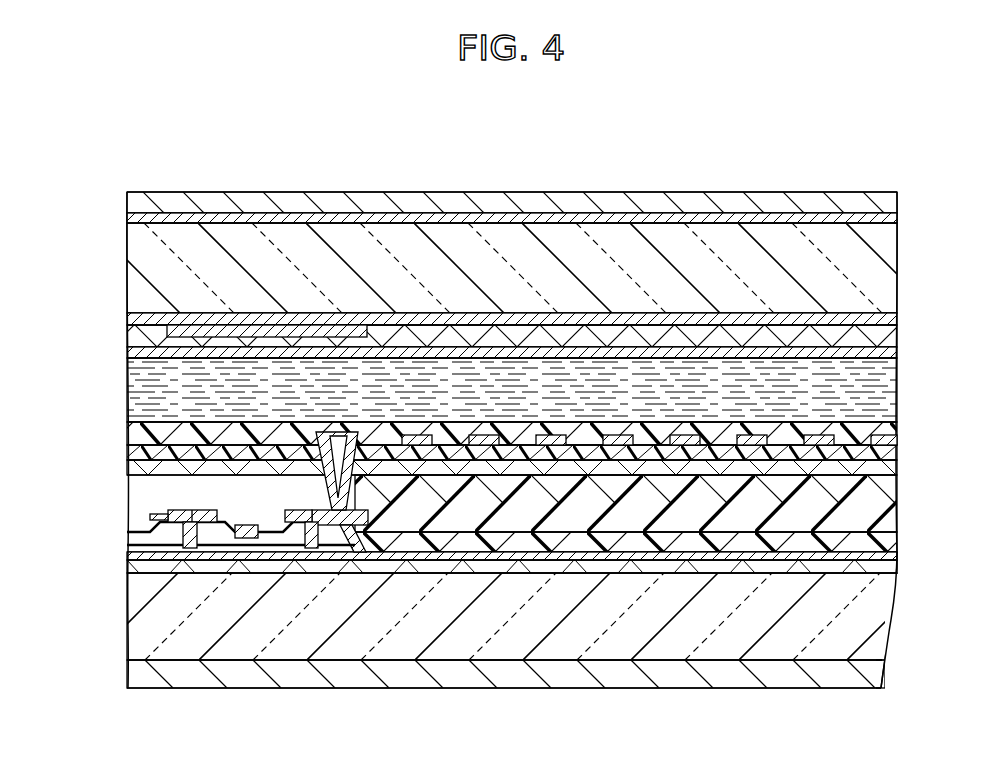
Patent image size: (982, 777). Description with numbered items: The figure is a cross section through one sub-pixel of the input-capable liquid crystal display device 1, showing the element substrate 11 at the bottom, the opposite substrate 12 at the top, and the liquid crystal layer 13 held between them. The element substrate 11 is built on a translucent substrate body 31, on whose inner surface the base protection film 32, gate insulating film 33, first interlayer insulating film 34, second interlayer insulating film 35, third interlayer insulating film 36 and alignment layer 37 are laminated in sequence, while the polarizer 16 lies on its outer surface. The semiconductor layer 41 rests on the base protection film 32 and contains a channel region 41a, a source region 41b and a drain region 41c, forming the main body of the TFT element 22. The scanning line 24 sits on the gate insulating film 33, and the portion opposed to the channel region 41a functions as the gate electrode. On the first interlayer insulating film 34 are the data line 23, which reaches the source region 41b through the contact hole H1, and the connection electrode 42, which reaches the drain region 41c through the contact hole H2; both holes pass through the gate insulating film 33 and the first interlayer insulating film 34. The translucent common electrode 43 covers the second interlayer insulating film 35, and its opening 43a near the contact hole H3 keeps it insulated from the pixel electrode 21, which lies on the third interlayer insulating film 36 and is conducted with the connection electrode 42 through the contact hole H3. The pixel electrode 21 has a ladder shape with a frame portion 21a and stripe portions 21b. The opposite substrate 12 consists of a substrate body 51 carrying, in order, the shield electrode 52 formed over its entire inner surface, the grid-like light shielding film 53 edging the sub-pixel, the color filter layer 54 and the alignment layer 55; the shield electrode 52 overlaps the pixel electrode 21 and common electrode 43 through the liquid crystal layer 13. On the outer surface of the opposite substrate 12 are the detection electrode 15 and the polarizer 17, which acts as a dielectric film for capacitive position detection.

The input-capable liquid crystal display device 1 is at (826, 161).
The element substrate 11 is at (95, 425).
The opposite substrate 12 is at (95, 355).
The liquid crystal layer 13 is at (95, 358).
The detection electrode 15 is at (127, 220).
The polarizer 16 is at (127, 678).
The polarizer 17 is at (127, 200).
The pixel electrode 21 is at (646, 271).
The frame portion 21a is at (415, 435).
The stripe portions 21b is at (548, 435).
The TFT element 22 is at (355, 552).
The data line 23 is at (175, 510).
The scanning line 24 is at (247, 525).
The substrate body 31 is at (876, 620).
The base protection film 32 is at (892, 567).
The gate insulating film 33 is at (893, 557).
The first interlayer insulating film 34 is at (895, 543).
The second interlayer insulating film 35 is at (895, 490).
The third interlayer insulating film 36 is at (895, 455).
The alignment layer 37 is at (895, 430).
The semiconductor layer 41 is at (241, 642).
The channel region 41a is at (248, 550).
The source region 41b is at (202, 550).
The drain region 41c is at (300, 550).
The connection electrode 42 is at (370, 522).
The common electrode 43 is at (895, 468).
The opening 43a is at (320, 438).
The substrate body 51 is at (895, 262).
The shield electrode 52 is at (895, 320).
The light shielding film 53 is at (209, 325).
The color filter layer 54 is at (888, 337).
The alignment layer 55 is at (890, 353).
The contact hole H1 is at (181, 512).
The contact hole H2 is at (285, 510).
The contact hole H3 is at (349, 443).